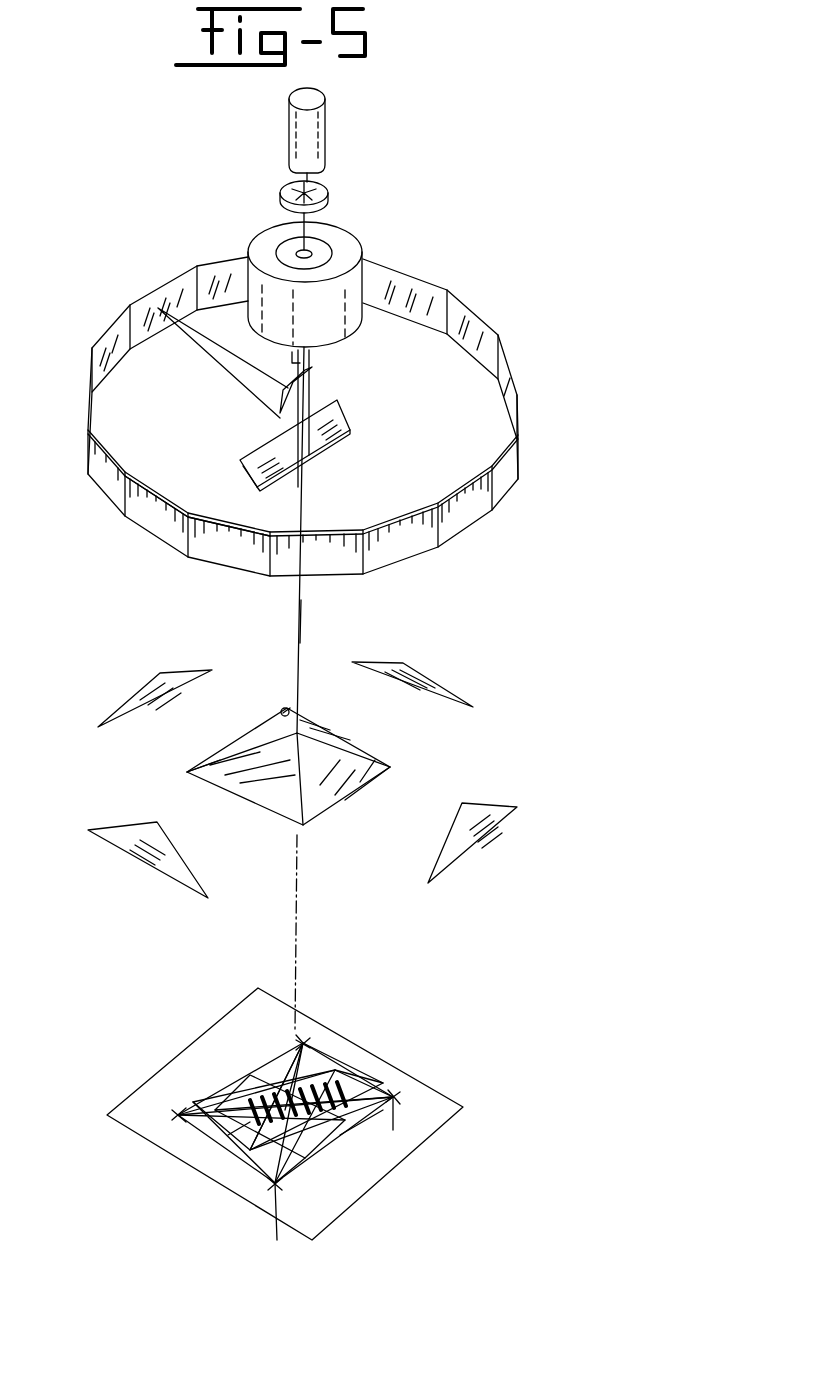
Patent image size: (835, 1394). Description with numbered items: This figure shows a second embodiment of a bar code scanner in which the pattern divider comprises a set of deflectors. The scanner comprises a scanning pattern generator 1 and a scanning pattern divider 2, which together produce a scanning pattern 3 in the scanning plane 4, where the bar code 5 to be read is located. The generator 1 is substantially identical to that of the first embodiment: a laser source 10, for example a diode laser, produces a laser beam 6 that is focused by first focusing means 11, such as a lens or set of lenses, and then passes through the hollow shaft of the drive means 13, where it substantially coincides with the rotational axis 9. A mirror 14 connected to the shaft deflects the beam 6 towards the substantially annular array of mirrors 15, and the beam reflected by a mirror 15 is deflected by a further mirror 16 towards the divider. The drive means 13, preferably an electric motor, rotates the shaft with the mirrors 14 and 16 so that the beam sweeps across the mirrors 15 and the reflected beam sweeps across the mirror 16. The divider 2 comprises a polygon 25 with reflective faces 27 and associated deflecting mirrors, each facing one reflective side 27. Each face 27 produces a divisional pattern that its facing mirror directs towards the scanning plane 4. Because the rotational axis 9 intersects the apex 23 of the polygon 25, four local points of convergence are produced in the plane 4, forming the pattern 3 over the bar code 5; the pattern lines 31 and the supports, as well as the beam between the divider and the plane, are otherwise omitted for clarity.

The scanning pattern generator 1 is at (478, 297).
The scanning pattern divider 2 is at (319, 772).
The scanning pattern 3 is at (357, 1062).
The scanning plane 4 is at (137, 1122).
The bar code 5 is at (228, 1135).
The laser beam 6 is at (300, 643).
The rotational axis 9 is at (298, 928).
The laser source 10 is at (317, 131).
The first focusing means 11 is at (328, 195).
The drive means 13 is at (367, 262).
The mirror 14 is at (313, 368).
The mirrors 15 is at (180, 542).
The mirror 16 is at (347, 430).
The apex 23 is at (283, 715).
The polygon 25 is at (337, 800).
The reflective faces 27 is at (187, 770).
The wire 31 is at (392, 1095).